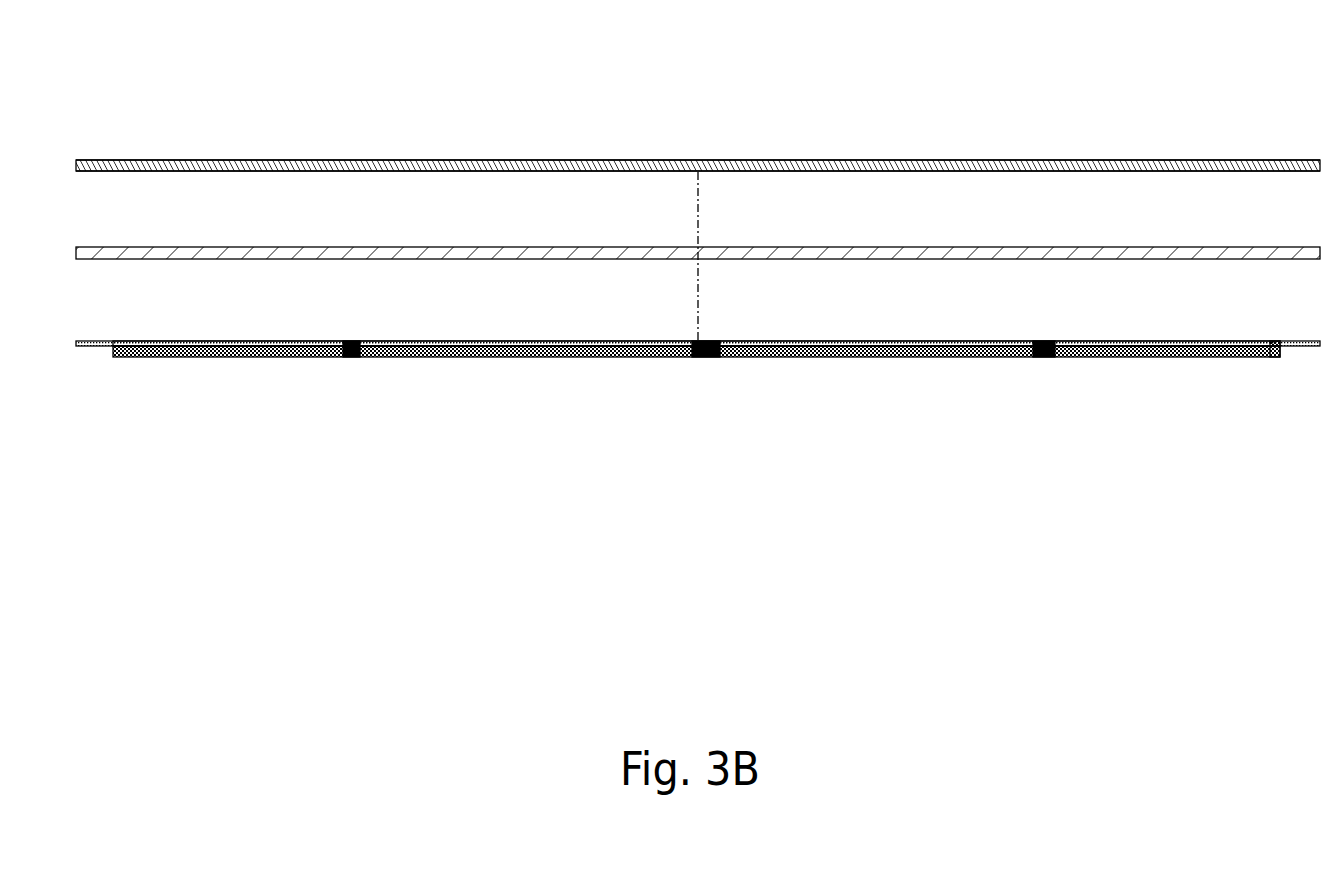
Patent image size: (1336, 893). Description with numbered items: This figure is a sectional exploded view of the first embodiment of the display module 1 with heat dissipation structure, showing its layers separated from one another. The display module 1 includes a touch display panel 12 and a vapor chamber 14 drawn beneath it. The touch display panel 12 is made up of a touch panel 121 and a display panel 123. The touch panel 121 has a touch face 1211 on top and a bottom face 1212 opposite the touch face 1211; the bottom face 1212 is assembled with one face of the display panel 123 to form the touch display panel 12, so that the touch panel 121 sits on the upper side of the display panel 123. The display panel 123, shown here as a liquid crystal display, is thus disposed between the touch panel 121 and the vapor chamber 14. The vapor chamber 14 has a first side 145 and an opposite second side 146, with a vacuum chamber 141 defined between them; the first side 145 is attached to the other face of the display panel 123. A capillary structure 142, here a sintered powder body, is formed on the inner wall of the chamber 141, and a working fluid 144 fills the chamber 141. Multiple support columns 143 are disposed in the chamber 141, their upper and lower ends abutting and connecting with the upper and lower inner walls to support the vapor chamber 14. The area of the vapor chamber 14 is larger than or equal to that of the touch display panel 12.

The display module 1 is at (1092, 78).
The touch display panel 12 is at (229, 578).
The touch panel 121 is at (267, 163).
The touch face 1211 is at (290, 162).
The bottom face 1212 is at (198, 174).
The display panel 123 is at (487, 248).
The vapor chamber 14 is at (117, 353).
The vacuum chamber 141 is at (244, 358).
The capillary structure 142 is at (195, 358).
The support columns 143 is at (360, 358).
The working fluid 144 is at (320, 357).
The first side 145 is at (1281, 343).
The second side 146 is at (1260, 358).